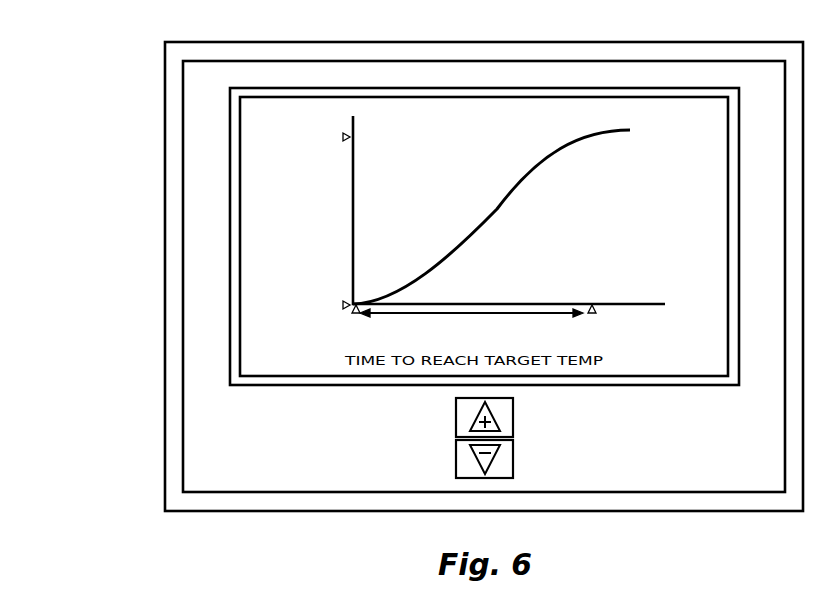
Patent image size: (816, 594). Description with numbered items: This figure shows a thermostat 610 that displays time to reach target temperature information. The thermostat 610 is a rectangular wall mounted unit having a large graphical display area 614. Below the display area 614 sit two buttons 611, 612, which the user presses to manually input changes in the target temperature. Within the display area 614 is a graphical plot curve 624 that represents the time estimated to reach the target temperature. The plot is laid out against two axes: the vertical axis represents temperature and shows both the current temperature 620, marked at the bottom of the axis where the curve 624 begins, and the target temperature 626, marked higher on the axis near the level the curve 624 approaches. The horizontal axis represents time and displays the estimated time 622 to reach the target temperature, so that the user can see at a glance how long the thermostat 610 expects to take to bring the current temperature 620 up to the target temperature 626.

The thermostat 610 is at (124, 40).
The button 611 is at (506, 412).
The button 612 is at (458, 468).
The graphical display area 614 is at (665, 350).
The current temperature 620 is at (326, 328).
The estimated time 622 is at (532, 331).
The graphical plot curve 624 is at (497, 209).
The target temperature 626 is at (322, 158).